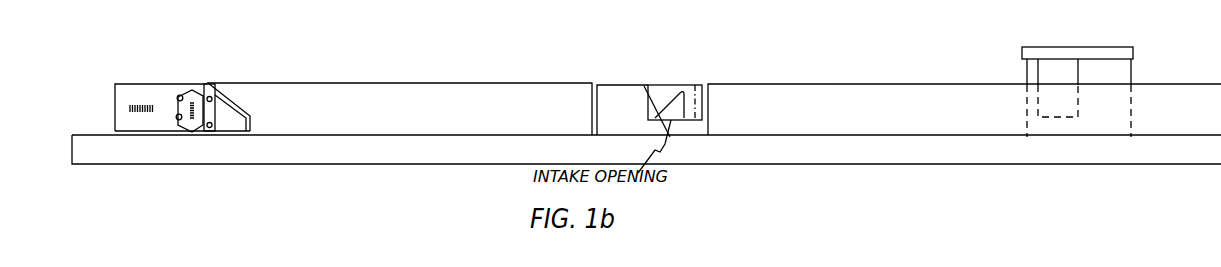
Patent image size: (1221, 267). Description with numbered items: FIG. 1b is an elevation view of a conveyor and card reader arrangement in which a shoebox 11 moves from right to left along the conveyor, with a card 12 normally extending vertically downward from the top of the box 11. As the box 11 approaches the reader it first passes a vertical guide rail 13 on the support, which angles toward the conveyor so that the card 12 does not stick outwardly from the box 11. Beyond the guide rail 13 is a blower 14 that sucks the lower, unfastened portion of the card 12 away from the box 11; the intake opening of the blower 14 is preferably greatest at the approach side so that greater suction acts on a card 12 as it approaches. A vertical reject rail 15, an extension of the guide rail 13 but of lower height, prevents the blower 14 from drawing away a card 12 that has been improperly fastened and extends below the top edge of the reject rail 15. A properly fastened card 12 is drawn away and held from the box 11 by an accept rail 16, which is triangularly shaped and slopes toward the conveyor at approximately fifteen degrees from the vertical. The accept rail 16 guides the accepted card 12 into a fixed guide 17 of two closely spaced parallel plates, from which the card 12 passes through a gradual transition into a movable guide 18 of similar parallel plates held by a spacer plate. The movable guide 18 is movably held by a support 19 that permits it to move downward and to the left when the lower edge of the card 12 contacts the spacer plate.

The shoebox 11 is at (1138, 50).
The card 12 is at (1038, 70).
The guide rail 13 is at (835, 82).
The blower 14 is at (688, 118).
The reject rail 15 is at (702, 84).
The accept rail 16 is at (616, 84).
The fixed guide 17 is at (365, 70).
The movable guide 18 is at (172, 70).
The support 19 is at (183, 132).